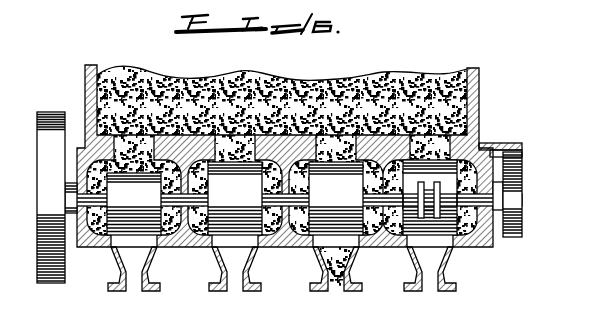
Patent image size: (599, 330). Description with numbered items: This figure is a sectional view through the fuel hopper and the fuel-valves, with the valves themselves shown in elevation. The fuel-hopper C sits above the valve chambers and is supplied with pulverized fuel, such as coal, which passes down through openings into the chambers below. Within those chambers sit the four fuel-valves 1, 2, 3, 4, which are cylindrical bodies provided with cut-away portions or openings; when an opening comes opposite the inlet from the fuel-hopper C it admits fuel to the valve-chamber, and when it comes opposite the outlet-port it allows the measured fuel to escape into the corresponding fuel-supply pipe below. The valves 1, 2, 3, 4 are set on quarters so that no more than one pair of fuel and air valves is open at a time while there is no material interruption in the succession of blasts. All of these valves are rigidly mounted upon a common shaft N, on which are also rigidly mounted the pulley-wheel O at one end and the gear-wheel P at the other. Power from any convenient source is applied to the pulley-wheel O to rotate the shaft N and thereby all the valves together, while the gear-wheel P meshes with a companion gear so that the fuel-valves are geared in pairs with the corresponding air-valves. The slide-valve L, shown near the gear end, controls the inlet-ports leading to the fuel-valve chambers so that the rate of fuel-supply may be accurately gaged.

The fuel-valve 1 is at (134, 204).
The fuel-valve 2 is at (235, 198).
The fuel-valve 3 is at (336, 198).
The fuel-valve 4 is at (453, 183).
The fuel-hopper C is at (355, 77).
The slide-valve L is at (520, 146).
The shaft N is at (298, 197).
The pulley-wheel O is at (47, 205).
The gear-wheel P is at (522, 193).